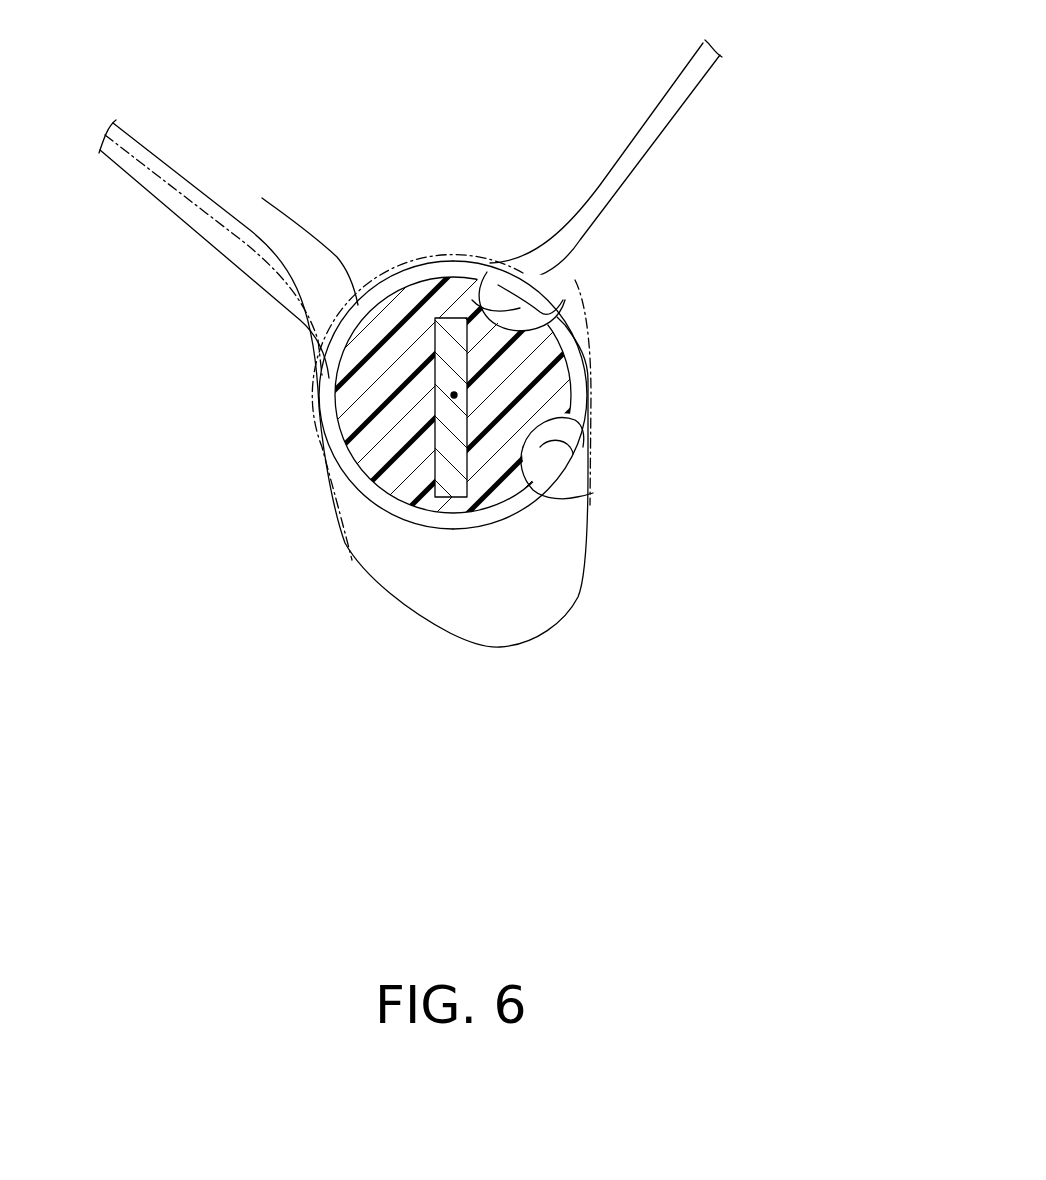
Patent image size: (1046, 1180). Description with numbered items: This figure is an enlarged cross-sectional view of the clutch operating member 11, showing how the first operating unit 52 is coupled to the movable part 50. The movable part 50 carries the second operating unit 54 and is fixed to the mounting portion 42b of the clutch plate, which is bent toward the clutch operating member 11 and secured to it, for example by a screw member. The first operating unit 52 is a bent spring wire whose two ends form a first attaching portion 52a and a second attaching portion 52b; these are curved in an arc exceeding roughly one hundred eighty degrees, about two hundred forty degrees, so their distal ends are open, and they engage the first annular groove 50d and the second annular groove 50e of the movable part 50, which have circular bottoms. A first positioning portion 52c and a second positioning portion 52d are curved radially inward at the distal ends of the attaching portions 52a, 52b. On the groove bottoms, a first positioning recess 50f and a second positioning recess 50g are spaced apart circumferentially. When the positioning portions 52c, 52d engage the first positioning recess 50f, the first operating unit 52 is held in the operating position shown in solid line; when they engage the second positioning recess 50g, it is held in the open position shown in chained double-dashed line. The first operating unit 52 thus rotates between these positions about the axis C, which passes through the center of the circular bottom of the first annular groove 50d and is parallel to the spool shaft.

The clutch operating member 11 is at (404, 160).
The movable part 50 is at (416, 351).
The first annular groove 50d is at (343, 317).
The second annular groove 50e is at (262, 198).
The first positioning recess 50f is at (583, 487).
The second positioning recess 50g is at (500, 310).
The first operating unit 52 is at (448, 291).
The first attaching portion 52a is at (280, 407).
The second attaching portion 52b is at (340, 480).
The first positioning portion 52c is at (625, 395).
The second positioning portion 52d is at (550, 414).
The second operating unit 54 is at (383, 293).
The mounting portion 42b is at (450, 450).
The axis C is at (450, 395).